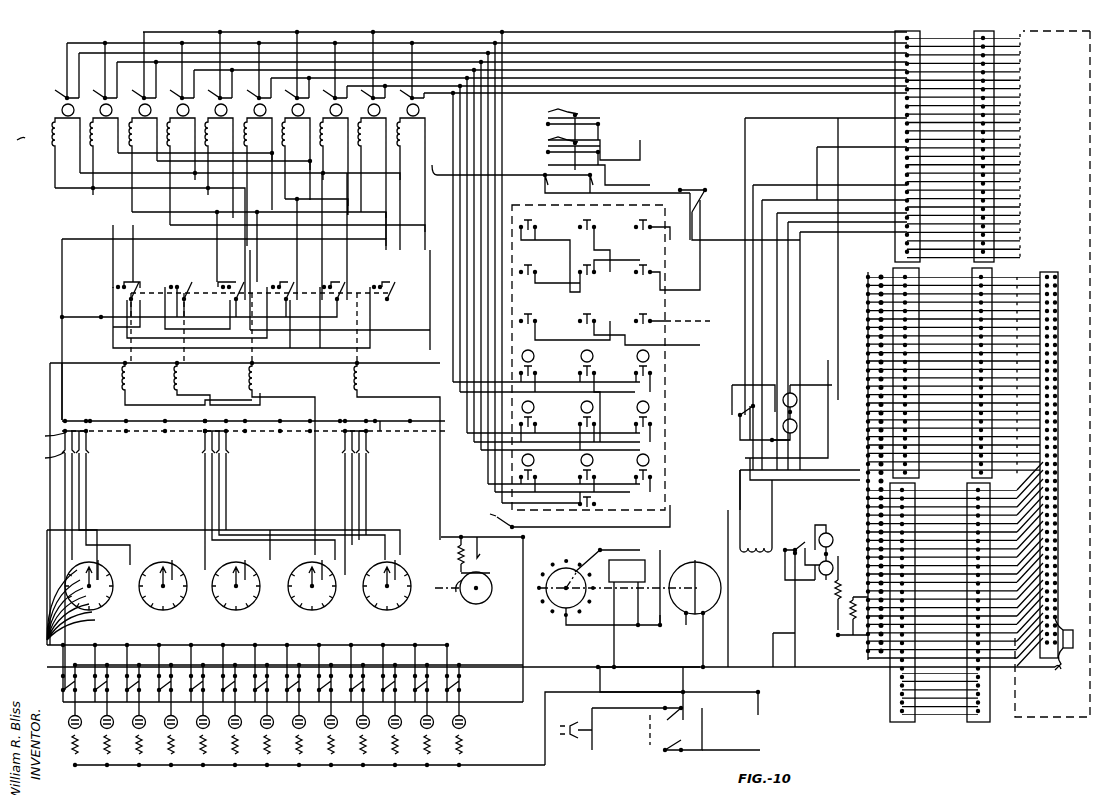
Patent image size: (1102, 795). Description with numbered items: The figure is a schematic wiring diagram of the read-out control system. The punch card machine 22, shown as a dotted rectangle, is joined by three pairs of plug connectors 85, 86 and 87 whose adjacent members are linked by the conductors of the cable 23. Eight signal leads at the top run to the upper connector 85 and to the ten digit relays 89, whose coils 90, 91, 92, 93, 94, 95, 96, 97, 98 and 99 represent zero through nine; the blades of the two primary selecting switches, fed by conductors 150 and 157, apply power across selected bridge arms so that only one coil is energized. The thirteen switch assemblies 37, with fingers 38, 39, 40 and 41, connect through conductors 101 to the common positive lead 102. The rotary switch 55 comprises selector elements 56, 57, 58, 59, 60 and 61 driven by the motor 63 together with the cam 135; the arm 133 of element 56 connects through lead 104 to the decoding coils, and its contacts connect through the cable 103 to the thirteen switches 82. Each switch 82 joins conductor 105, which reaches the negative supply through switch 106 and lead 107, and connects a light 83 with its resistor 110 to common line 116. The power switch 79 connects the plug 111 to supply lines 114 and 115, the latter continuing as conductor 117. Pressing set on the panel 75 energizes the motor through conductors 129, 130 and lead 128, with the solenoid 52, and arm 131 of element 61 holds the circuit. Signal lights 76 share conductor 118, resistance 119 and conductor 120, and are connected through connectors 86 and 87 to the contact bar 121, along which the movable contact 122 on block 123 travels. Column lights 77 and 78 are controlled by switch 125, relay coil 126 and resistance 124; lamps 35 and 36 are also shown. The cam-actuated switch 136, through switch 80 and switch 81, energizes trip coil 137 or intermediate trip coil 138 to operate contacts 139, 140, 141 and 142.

The plug connector 87 is at (505, 32).
The plug connector 85 is at (970, 31).
The digit relays 89 is at (221, 90).
The relay coil 90 is at (48, 160).
The relay coil 91 is at (105, 163).
The relay coil 92 is at (144, 171).
The relay coil 93 is at (182, 178).
The relay coil 94 is at (220, 171).
The relay coil 95 is at (259, 185).
The relay coil 96 is at (297, 165).
The relay coil 97 is at (335, 165).
The relay coil 98 is at (373, 185).
The relay coil 99 is at (412, 178).
The common lead 102 is at (48, 402).
The trip contact 140 is at (548, 104).
The intermediate trip contact 142 is at (546, 120).
The trip contact 139 is at (548, 138).
The intermediate trip contact 141 is at (546, 155).
The intermediate trip relay coil 138 is at (545, 185).
The trip relay coil 137 is at (600, 185).
The switch 81 is at (739, 214).
The control panel 75 is at (592, 355).
The conductor 157 is at (109, 312).
The conductor 150 is at (385, 338).
The lead 104 is at (70, 363).
The conductors 101 is at (85, 420).
The switch assemblies 37 is at (231, 554).
The finger 38 is at (373, 443).
The finger 39 is at (375, 453).
The finger 40 is at (88, 434).
The finger 41 is at (92, 448).
The selector switch element 56 is at (106, 595).
The selector switch element 57 is at (170, 608).
The selector switch element 58 is at (240, 611).
The selector switch element 59 is at (323, 612).
The selector switch element 60 is at (394, 608).
The rotating arm 133 is at (93, 569).
The thirteen conductor cable 103 is at (63, 635).
The rotary switch 55 is at (446, 597).
The cam 135 is at (476, 604).
The switch 136 is at (461, 556).
The switch 80 is at (496, 517).
The conductor 129 is at (670, 527).
The movable contact member 122 is at (537, 603).
The rotating arm 131 is at (578, 562).
The selector switch element 61 is at (566, 625).
The solenoid 52 is at (627, 614).
The conductor 130 is at (675, 558).
The motor 63 is at (722, 580).
The motor lead 128 is at (650, 625).
The supply line 114 is at (593, 643).
The conductor 117 is at (480, 667).
The conductor 105 is at (45, 715).
The switches 82 is at (296, 705).
The signal lights 83 is at (483, 718).
The resistors 110 is at (482, 747).
The common line 116 is at (548, 765).
The power switch 79 is at (640, 729).
The power plug 111 is at (568, 738).
The supply line 115 is at (716, 750).
The lamp 35 is at (800, 395).
The lamp 36 is at (795, 435).
The switch 106 is at (742, 428).
The conductor 107 is at (745, 458).
The common conductor 118 is at (865, 482).
The relay coil 126 is at (757, 540).
The switch 125 is at (790, 540).
The upper column signal light 77 is at (830, 532).
The lower column signal light 78 is at (835, 556).
The resistance 124 is at (838, 596).
The resistance 119 is at (853, 620).
The conductor 120 is at (773, 645).
The signal lights 76 is at (885, 682).
The plug connector 86 is at (970, 272).
The cable 23 is at (970, 488).
The contact bar 121 is at (1050, 272).
The punch card machine 22 is at (1040, 721).
The block 123 is at (1070, 668).